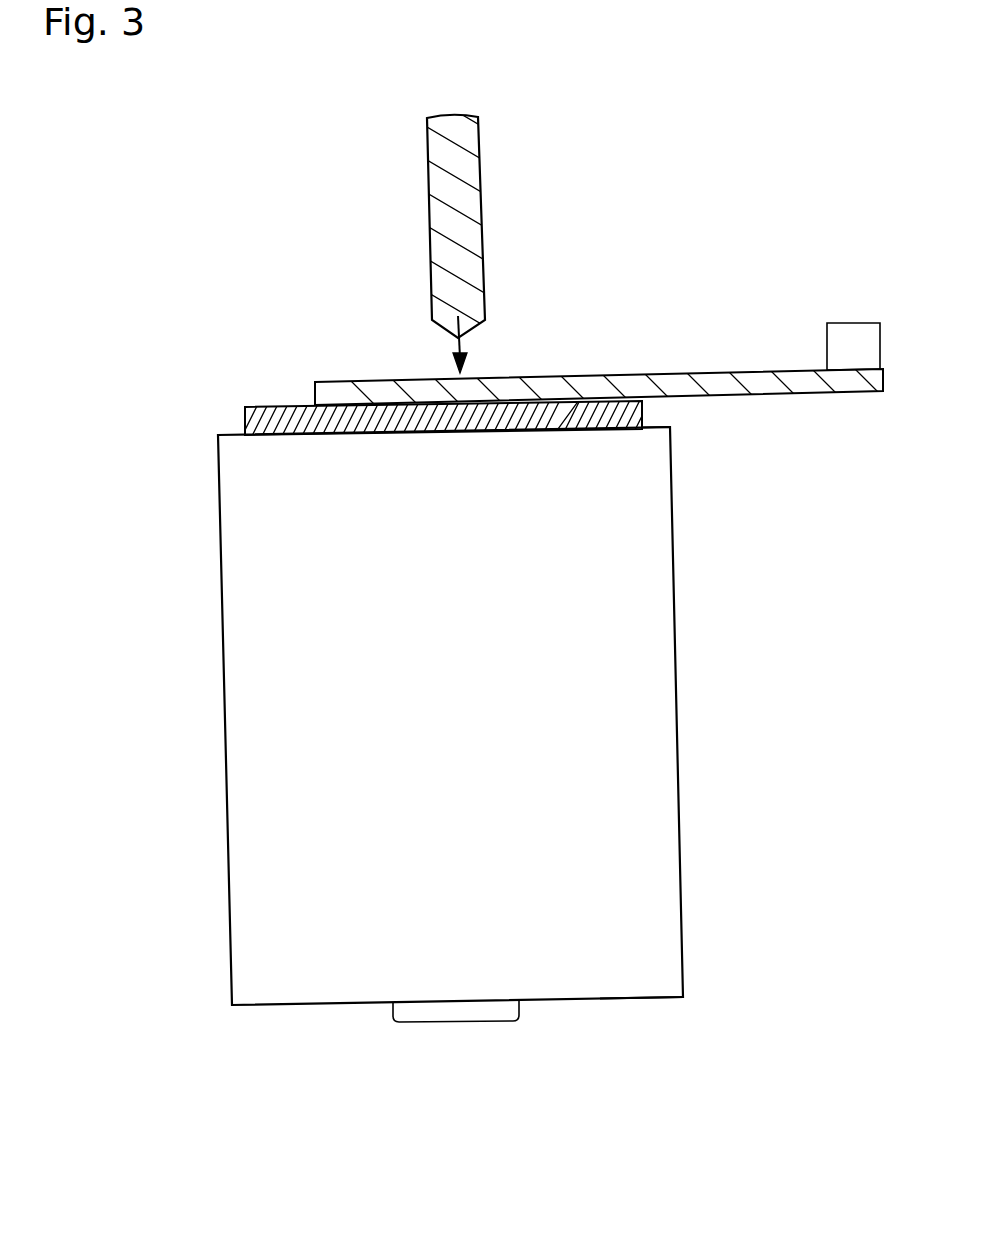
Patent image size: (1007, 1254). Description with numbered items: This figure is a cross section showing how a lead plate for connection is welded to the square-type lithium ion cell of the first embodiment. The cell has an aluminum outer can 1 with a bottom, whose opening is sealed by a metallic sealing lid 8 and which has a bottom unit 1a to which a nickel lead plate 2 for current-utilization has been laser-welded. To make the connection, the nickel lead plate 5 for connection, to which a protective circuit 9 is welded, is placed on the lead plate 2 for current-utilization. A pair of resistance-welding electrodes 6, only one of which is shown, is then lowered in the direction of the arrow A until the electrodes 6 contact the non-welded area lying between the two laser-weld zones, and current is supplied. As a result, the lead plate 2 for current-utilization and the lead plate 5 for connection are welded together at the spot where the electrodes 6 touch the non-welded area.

The outer can 1 is at (655, 717).
The bottom unit 1a is at (665, 424).
The lead plate for current-utilization 2 is at (267, 404).
The lead plate for connection 5 is at (622, 387).
The resistance-welding electrodes 6 is at (467, 208).
The metallic sealing lid 8 is at (633, 1002).
The protective circuit 9 is at (857, 333).
The arrow A is at (465, 334).